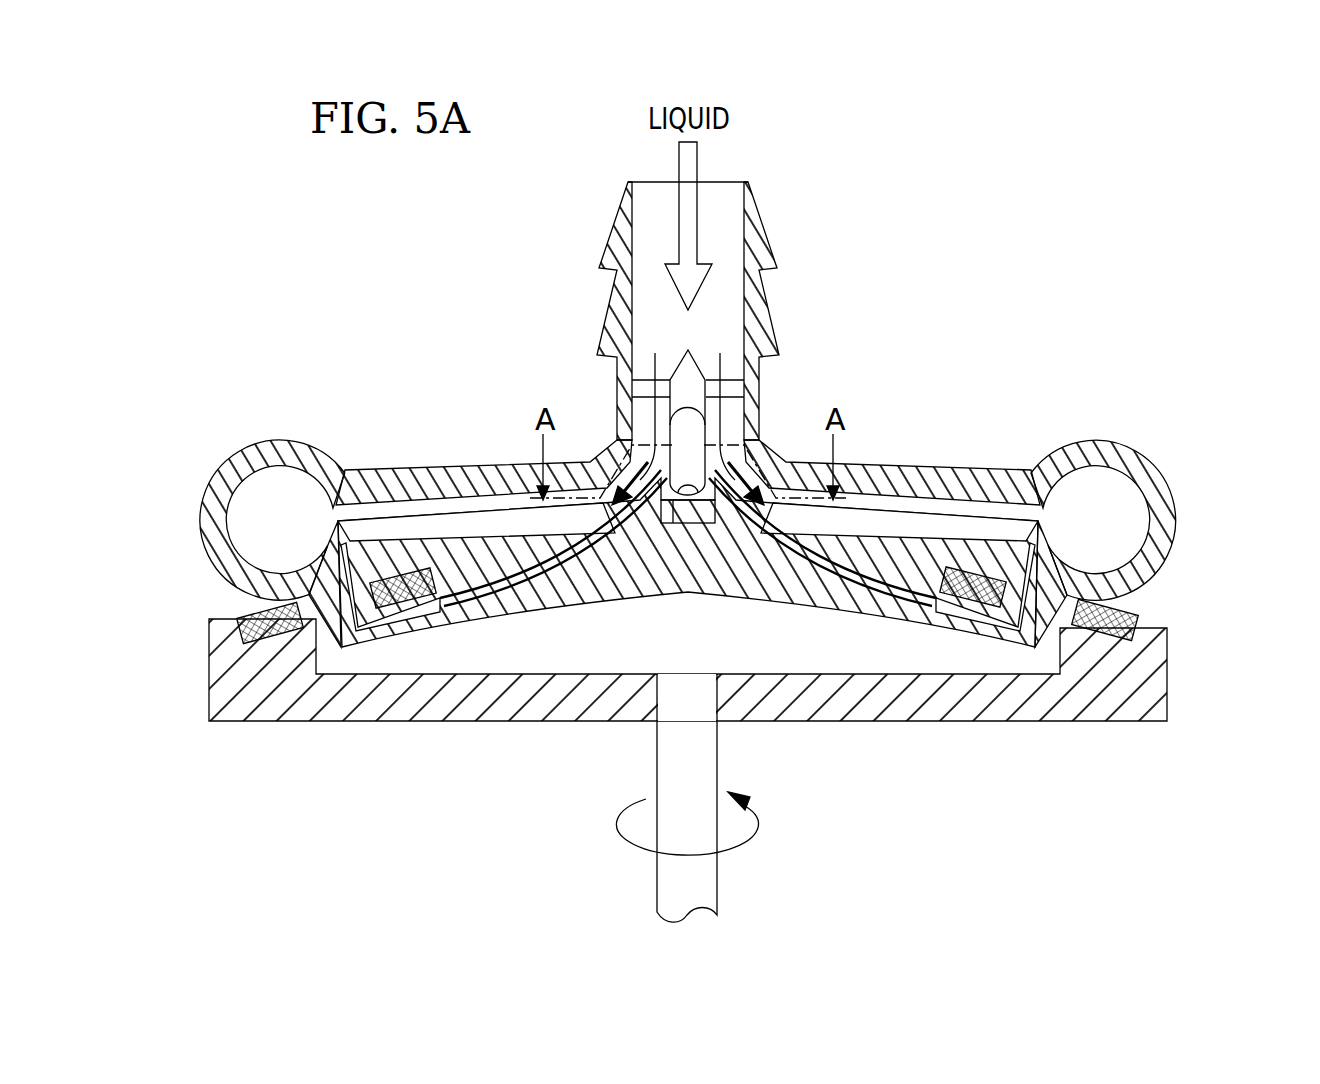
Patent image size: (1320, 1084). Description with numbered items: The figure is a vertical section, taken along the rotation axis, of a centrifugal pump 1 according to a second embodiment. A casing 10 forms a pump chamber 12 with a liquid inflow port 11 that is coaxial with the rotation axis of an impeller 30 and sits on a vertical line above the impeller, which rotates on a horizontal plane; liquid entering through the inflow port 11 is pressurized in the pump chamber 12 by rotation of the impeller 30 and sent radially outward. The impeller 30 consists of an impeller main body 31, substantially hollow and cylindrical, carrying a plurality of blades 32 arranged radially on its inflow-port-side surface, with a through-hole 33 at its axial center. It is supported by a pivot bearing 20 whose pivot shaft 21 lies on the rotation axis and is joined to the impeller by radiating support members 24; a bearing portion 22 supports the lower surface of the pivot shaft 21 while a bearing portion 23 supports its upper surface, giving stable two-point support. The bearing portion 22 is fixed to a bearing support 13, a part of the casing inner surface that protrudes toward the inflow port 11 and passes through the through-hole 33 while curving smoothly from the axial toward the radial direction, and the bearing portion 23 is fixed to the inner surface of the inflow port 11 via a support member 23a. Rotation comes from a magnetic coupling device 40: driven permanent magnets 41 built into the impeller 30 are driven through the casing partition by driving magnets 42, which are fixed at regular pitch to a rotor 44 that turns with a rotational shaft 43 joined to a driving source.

The centrifugal pump 1 is at (930, 222).
The casing 10 is at (868, 470).
The liquid inflow port 11 is at (718, 200).
The pump chamber 12 is at (1125, 520).
The bearing support 13 is at (702, 545).
The pivot bearing 20 is at (645, 405).
The pivot shaft 21 is at (697, 435).
The bearing portion 22 is at (673, 523).
The bearing portion 23 is at (688, 415).
The support member 23a is at (738, 388).
The support member 24 is at (640, 503).
The impeller 30 is at (360, 494).
The impeller main body 31 is at (500, 570).
The blades 32 is at (453, 520).
The through-hole 33 is at (740, 520).
The magnetic coupling device 40 is at (1049, 738).
The driven permanent magnet 41 is at (402, 583).
The driving magnet 42 is at (250, 607).
The rotational shaft 43 is at (718, 878).
The rotor 44 is at (1170, 700).